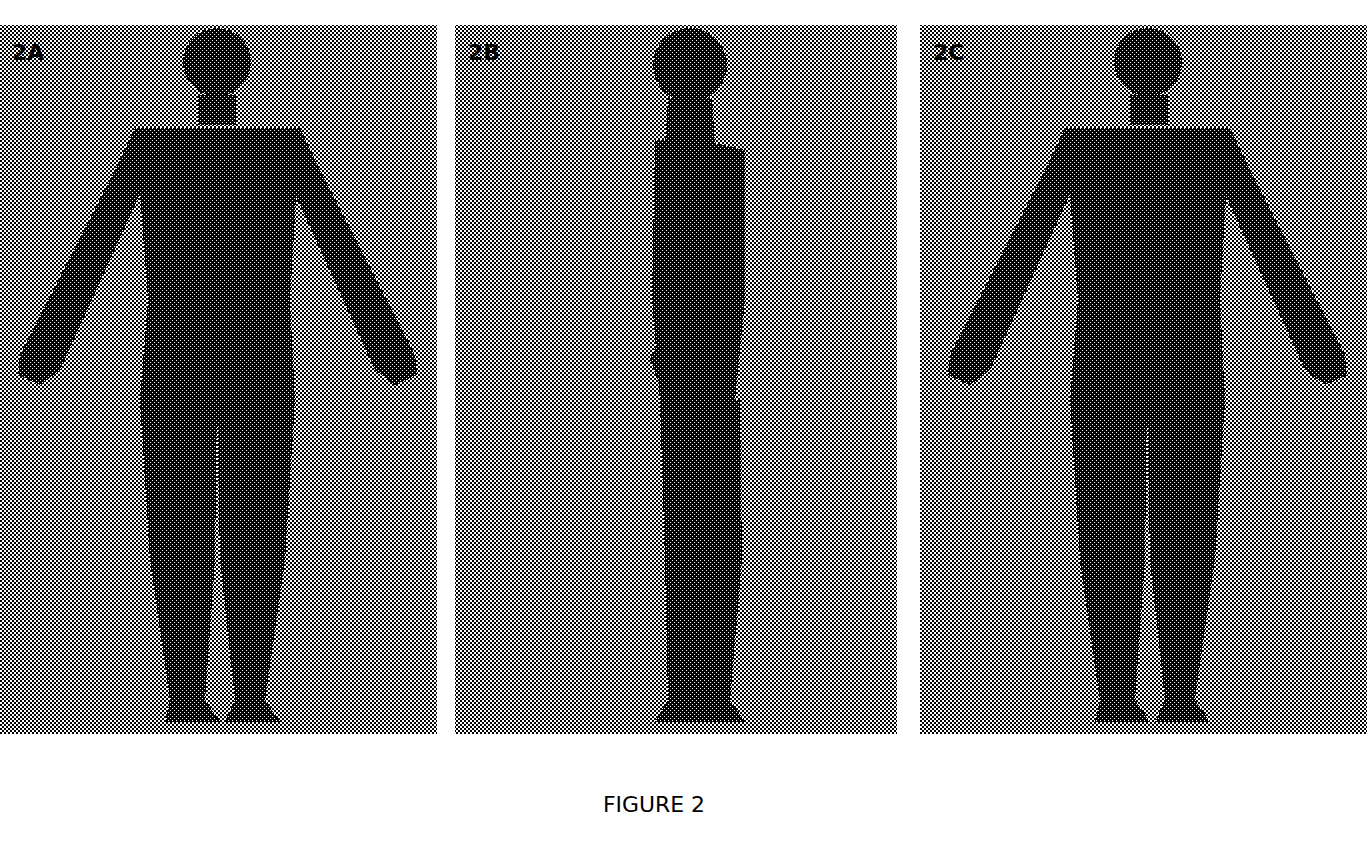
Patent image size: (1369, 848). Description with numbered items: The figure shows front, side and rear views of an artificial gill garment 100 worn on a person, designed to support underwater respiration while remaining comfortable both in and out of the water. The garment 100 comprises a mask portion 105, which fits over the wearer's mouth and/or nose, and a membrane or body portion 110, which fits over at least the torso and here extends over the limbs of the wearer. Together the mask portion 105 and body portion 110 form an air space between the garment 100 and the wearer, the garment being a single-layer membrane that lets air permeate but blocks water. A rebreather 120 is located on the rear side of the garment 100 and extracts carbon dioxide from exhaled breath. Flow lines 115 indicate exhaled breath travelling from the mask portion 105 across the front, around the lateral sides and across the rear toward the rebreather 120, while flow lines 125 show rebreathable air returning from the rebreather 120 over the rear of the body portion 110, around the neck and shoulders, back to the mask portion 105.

In FIG. 2A, the artificial gill garment 100 is at (228, 375).
In FIG. 2A, the mask portion 105 is at (195, 103).
In FIG. 2B, the mask portion 105 is at (650, 101).
In FIG. 2A, the body portion 110 is at (128, 413).
In FIG. 2B, the body portion 110 is at (748, 404).
In FIG. 2C, the body portion 110 is at (1223, 378).
In FIG. 2A, the flow lines 115 is at (285, 240).
In FIG. 2B, the flow lines 115 is at (688, 197).
In FIG. 2C, the flow lines 115 is at (1092, 223).
In FIG. 2B, the rebreather 120 is at (748, 215).
In FIG. 2C, the rebreather 120 is at (1168, 205).
In FIG. 2A, the flow lines 125 is at (243, 122).
In FIG. 2B, the flow lines 125 is at (730, 163).
In FIG. 2C, the flow lines 125 is at (1122, 165).